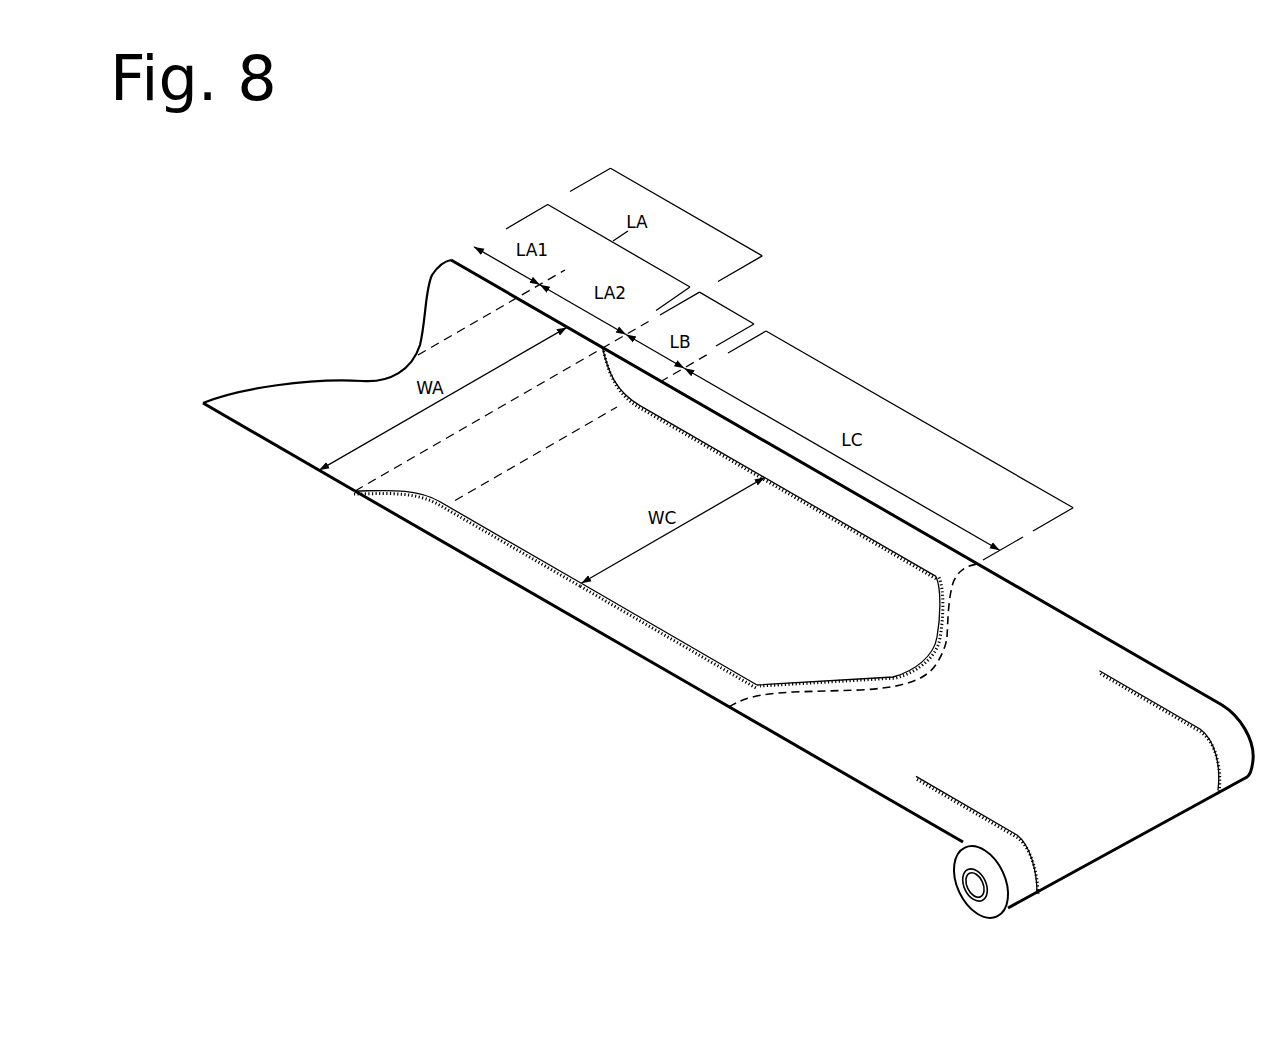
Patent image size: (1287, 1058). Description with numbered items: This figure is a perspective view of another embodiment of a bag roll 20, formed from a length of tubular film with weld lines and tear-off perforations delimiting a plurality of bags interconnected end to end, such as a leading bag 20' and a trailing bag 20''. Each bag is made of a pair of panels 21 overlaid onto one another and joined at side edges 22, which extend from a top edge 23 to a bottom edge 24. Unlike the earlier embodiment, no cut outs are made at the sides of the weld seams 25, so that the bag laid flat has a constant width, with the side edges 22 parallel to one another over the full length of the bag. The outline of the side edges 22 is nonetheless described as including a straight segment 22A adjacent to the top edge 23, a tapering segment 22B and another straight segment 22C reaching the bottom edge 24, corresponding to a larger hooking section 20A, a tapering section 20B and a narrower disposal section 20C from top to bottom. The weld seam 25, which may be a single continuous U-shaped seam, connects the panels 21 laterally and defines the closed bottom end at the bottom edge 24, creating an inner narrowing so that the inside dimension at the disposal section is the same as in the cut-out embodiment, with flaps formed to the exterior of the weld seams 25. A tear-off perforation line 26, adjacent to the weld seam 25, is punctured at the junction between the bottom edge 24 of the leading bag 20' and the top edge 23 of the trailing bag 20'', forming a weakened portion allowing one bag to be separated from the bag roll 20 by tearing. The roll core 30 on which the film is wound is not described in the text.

The bag roll 20 is at (852, 546).
The larger hooking section 20A is at (672, 204).
The tapering section 20B is at (727, 308).
The narrower disposal section 20C is at (905, 410).
The bag 20' is at (527, 649).
The bag 20'' is at (960, 803).
The panels 21 is at (559, 572).
The side edges 22 is at (746, 421).
The straight segment 22A is at (272, 443).
The tapering segment 22B is at (380, 492).
The straight segment 22C is at (686, 646).
The top edge 23 is at (359, 381).
The bottom edge 24 is at (928, 574).
The weld seam 25 is at (883, 548).
The tear-off perforation line 26 is at (950, 622).
The roll core 30 is at (968, 887).